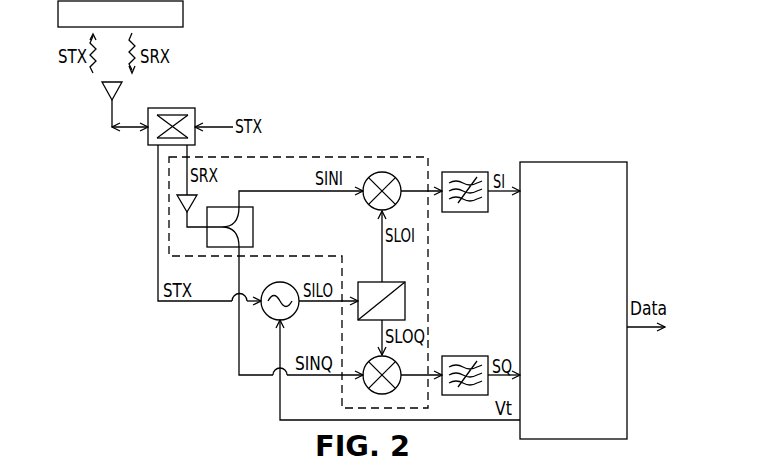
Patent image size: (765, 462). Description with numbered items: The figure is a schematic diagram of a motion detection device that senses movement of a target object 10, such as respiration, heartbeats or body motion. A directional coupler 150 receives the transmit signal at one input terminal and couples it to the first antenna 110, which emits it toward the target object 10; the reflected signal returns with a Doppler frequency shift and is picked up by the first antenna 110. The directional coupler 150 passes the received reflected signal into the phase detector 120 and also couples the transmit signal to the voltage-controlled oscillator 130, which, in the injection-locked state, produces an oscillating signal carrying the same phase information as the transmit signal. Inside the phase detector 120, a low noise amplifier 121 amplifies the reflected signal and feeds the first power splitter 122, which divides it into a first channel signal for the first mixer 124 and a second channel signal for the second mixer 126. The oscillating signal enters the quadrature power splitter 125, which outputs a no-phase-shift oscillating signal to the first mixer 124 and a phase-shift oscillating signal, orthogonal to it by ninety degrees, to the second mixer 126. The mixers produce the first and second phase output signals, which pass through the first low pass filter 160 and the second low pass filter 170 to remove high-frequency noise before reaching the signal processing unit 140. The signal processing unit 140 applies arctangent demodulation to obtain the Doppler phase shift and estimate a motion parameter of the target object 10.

The target object 10 is at (184, 13).
The first antenna 110 is at (122, 88).
The phase detector 120 is at (355, 157).
The low noise amplifier 121 is at (178, 207).
The first power splitter 122 is at (255, 225).
The first mixer 124 is at (400, 182).
The quadrature power splitter 125 is at (366, 282).
The second mixer 126 is at (368, 361).
The voltage-controlled oscillator 130 is at (299, 313).
The signal processing unit 140 is at (600, 162).
The directional coupler 150 is at (188, 108).
The first low pass filter 160 is at (475, 172).
The second low pass filter 170 is at (475, 356).